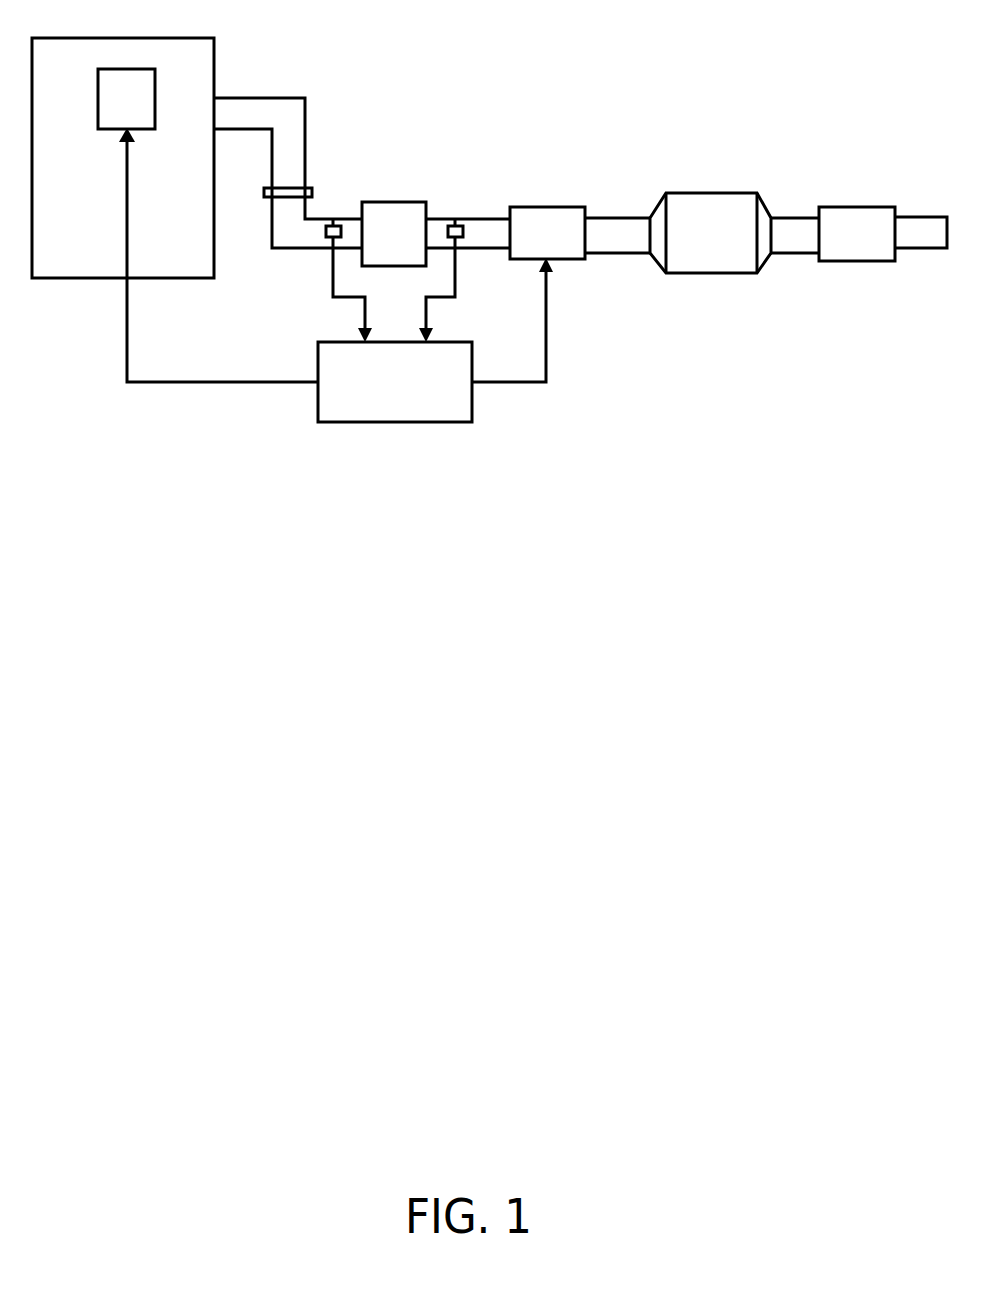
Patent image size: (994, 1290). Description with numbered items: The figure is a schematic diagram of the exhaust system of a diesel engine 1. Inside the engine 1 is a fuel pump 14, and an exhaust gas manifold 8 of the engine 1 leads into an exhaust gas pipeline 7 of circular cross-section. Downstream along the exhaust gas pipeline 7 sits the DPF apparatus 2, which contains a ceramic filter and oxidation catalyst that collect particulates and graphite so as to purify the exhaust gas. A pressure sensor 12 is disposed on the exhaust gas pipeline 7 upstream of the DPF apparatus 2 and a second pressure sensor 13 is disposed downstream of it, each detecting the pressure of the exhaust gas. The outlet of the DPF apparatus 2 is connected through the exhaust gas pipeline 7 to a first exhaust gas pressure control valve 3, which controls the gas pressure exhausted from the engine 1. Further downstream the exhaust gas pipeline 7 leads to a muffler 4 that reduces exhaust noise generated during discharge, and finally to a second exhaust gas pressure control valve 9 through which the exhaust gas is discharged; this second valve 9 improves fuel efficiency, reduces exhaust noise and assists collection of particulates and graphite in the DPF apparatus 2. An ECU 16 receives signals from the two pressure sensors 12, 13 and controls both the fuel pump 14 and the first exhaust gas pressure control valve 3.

The diesel engine 1 is at (133, 142).
The fuel pump 14 is at (143, 87).
The exhaust gas manifold 8 is at (288, 157).
The exhaust gas pipeline 7 is at (598, 254).
The pressure sensor 12 is at (359, 253).
The pressure sensor 13 is at (430, 253).
The DPF apparatus 2 is at (394, 255).
The first exhaust gas pressure control valve 3 is at (546, 211).
The muffler 4 is at (710, 217).
The second exhaust gas pressure control valve 9 is at (857, 212).
The ECU 16 is at (336, 275).